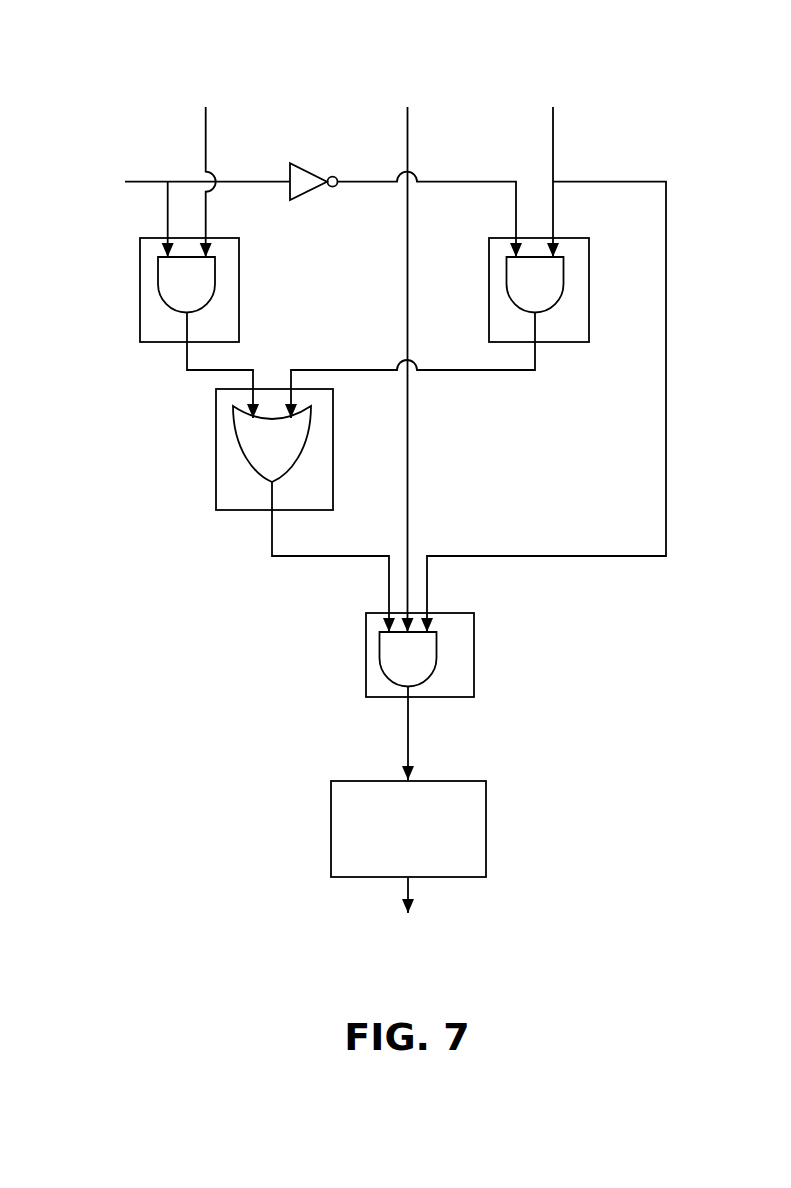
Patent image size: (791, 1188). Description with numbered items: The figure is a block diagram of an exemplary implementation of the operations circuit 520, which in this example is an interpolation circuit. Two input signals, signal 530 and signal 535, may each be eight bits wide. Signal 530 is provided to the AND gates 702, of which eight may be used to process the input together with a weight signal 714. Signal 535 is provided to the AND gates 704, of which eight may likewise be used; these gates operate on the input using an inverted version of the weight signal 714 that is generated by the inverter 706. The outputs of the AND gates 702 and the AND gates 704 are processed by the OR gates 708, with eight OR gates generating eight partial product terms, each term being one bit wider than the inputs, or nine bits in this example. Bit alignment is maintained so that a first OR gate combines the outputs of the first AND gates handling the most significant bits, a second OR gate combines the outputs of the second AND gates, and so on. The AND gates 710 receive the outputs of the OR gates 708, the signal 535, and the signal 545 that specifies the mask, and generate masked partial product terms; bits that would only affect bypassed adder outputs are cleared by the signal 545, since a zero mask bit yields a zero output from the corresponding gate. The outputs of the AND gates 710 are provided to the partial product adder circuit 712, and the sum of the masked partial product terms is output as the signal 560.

The operations circuit 520 is at (394, 24).
The signal 530 is at (205, 168).
The signal 545 is at (408, 356).
The signal 535 is at (543, 356).
The weight signal 714 is at (187, 215).
The inverter 706 is at (311, 172).
The AND gates 702 is at (199, 328).
The AND gates 704 is at (437, 328).
The OR gates 708 is at (305, 510).
The AND gates 710 is at (420, 696).
The partial product adder circuit 712 is at (408, 829).
The signal 560 is at (408, 909).